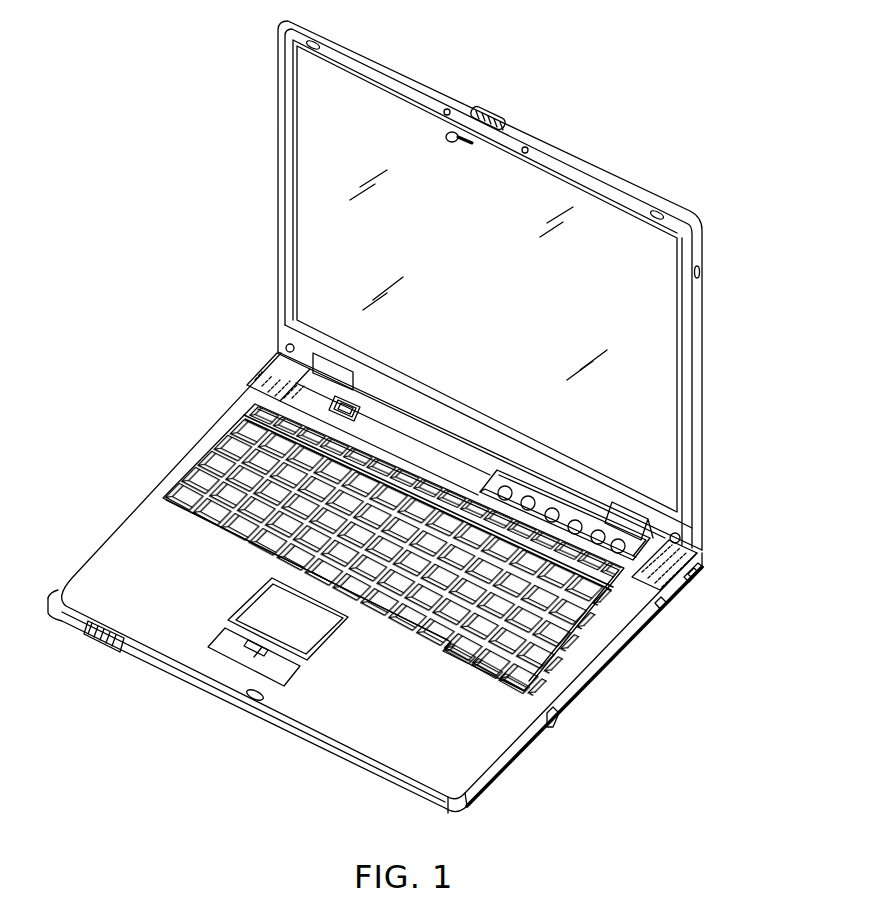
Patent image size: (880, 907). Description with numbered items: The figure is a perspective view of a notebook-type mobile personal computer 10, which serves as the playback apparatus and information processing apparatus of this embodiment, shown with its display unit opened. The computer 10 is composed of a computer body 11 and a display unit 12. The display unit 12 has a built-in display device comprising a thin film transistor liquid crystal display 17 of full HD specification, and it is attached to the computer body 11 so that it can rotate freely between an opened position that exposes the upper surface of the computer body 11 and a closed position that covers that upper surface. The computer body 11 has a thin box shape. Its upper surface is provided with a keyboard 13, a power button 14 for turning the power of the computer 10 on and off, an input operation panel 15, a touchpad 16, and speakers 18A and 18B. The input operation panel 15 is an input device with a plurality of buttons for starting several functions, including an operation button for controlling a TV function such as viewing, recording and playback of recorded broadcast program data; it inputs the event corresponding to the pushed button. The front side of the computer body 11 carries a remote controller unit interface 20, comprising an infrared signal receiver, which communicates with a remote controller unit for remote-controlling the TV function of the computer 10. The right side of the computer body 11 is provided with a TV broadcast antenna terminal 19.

The notebook-type mobile personal computer 10 is at (694, 707).
The computer body 11 is at (490, 787).
The display unit 12 is at (703, 405).
The keyboard 13 is at (540, 655).
The power button 14 is at (335, 402).
The input operation panel 15 is at (573, 517).
The touchpad 16 is at (262, 618).
The thin film transistor liquid crystal display (TFT-LCD) 17 is at (660, 305).
The speaker 18A is at (278, 368).
The speaker 18B is at (697, 553).
The TV broadcast antenna terminal 19 is at (687, 580).
The remote controller unit interface 20 is at (103, 657).